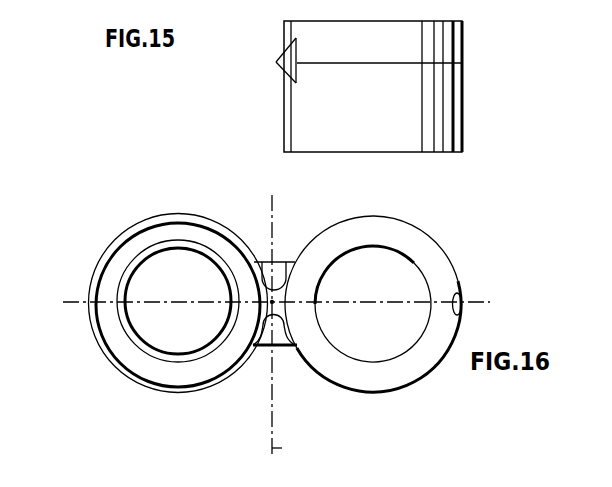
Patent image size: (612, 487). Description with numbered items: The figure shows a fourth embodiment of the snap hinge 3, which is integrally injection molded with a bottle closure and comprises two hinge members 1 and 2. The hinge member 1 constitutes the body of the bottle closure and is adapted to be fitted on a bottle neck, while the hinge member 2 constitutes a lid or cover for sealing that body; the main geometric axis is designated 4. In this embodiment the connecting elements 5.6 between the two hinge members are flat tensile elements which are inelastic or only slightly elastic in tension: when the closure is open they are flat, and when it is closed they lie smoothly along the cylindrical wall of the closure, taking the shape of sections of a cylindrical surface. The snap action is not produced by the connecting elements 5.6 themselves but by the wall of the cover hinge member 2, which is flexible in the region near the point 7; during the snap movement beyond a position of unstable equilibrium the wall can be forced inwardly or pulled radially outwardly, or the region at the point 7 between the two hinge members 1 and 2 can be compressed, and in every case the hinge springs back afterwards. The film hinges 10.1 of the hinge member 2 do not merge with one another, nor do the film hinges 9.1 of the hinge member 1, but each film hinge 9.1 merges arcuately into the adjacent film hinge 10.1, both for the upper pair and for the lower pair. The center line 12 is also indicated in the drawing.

In FIG. 15, the hinge member 1 is at (442, 90).
In FIG. 16, the hinge member 1 is at (407, 365).
In FIG. 15, the hinge member 2 is at (440, 43).
In FIG. 16, the hinge member 2 is at (138, 357).
In FIG. 15, the snap hinge 3 is at (254, 61).
In FIG. 16, the main geometric axis 4 is at (273, 448).
In FIG. 15, the connecting elements 5.6 is at (288, 58).
In FIG. 16, the connecting elements 5.6 is at (280, 346).
In FIG. 16, the point 7 is at (272, 302).
In FIG. 15, the film hinge 9.1 is at (287, 80).
In FIG. 16, the film hinge 9.1 is at (283, 260).
In FIG. 15, the film hinge 10.1 is at (283, 50).
In FIG. 16, the film hinge 10.1 is at (260, 257).
In FIG. 16, the center axis 12 is at (75, 301).